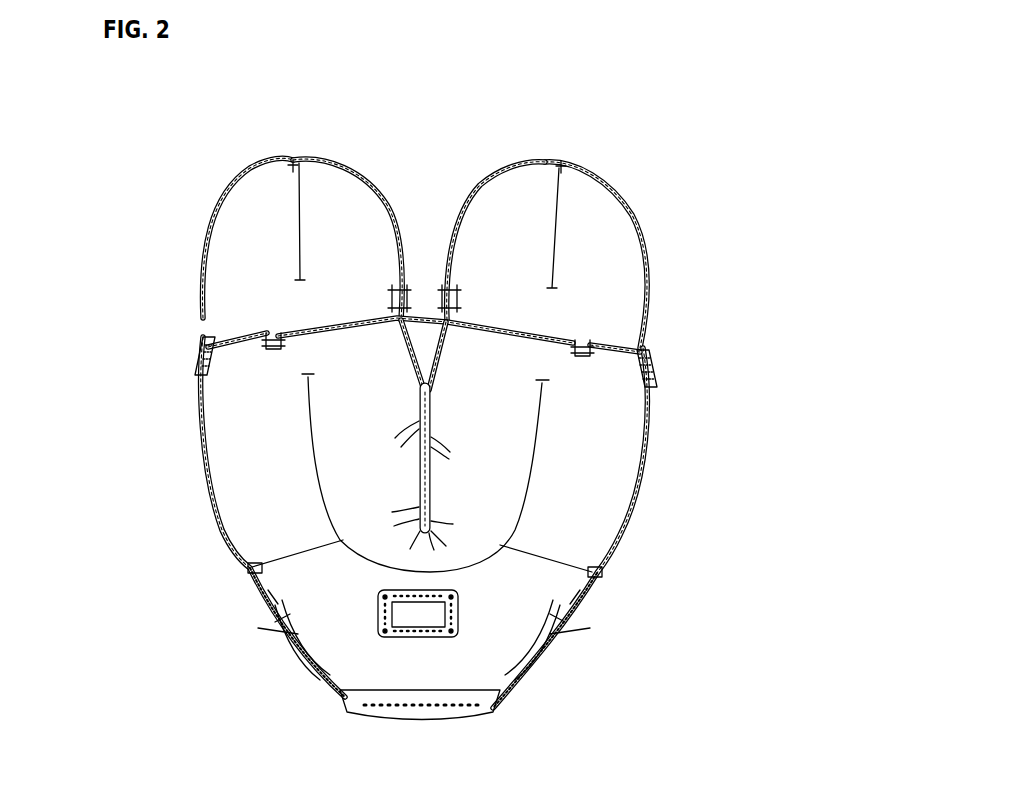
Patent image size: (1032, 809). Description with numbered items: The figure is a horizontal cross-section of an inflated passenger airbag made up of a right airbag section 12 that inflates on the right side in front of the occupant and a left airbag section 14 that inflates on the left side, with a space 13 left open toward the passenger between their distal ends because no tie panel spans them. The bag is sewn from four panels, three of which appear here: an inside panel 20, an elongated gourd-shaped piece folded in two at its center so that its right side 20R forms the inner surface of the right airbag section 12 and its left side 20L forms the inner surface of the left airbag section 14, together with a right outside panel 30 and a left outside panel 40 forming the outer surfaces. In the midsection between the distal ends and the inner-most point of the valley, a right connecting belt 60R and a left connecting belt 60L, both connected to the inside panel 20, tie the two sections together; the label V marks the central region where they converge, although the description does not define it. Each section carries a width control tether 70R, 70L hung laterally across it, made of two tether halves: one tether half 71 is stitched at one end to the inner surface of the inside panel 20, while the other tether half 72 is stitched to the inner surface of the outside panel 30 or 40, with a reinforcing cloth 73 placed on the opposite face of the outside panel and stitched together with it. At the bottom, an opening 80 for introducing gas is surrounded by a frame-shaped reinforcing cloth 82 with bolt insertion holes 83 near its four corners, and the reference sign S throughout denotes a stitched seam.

The right airbag section 12 is at (272, 212).
The space 13 is at (433, 179).
The left airbag section 14 is at (678, 227).
The inside panel 20 is at (541, 151).
The right side of inside panel 20R is at (371, 180).
The left side of inside panel 20L is at (504, 167).
The right outside panel 30 is at (197, 455).
The left outside panel 40 is at (652, 478).
The right connecting belt 60R is at (415, 312).
The left connecting belt 60L is at (440, 350).
The vent V is at (408, 370).
The right width control tether 70R is at (281, 313).
The left width control tether 70L is at (567, 321).
The tether half 71 is at (323, 330).
The tether half 72 is at (242, 333).
The reinforcing cloth 73 is at (196, 350).
The opening 80 is at (415, 630).
The reinforcing cloth 82 is at (458, 610).
The bolt insertion holes 83 is at (378, 595).
The stitched seam S is at (301, 165).